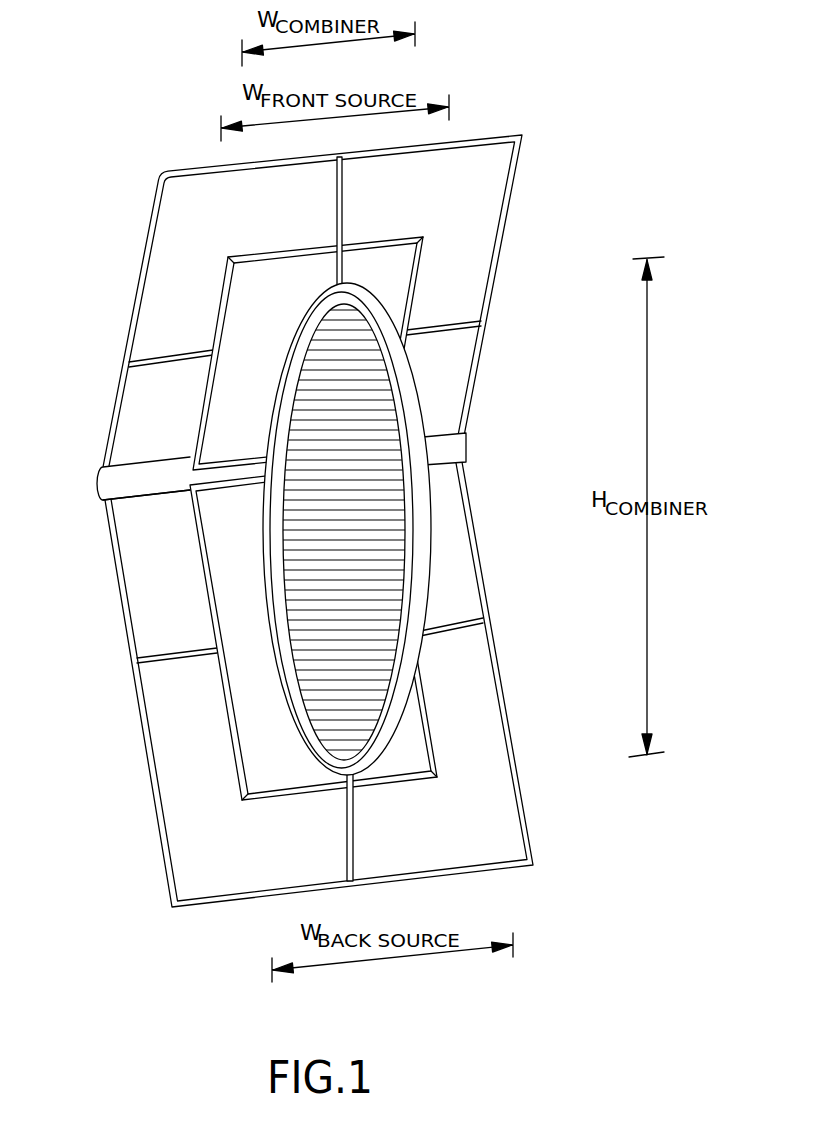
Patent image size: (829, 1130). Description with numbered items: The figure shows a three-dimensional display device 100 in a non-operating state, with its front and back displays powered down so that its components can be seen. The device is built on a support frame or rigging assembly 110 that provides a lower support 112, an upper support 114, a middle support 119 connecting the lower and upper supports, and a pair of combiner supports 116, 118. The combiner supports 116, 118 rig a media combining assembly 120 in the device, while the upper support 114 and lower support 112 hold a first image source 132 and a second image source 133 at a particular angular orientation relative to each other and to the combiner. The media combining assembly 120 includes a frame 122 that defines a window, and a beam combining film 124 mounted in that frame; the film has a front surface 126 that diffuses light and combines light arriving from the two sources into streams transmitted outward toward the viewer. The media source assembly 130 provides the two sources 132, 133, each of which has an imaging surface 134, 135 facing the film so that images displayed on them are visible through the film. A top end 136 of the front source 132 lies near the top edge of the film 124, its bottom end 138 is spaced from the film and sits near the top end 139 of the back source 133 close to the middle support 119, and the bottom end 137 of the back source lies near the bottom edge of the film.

The 3D display device 100 is at (358, 482).
The support frame or rigging assembly 110 is at (295, 521).
The lower support 112 is at (152, 773).
The upper support 114 is at (131, 324).
The combiner support 116 is at (353, 842).
The combiner support 118 is at (343, 197).
The middle support 119 is at (462, 447).
The 2D media combining assembly 120 is at (409, 529).
The frame 122 is at (420, 648).
The beam combining film 124 is at (403, 528).
The front surface 126 is at (400, 462).
The 2D media source assembly 130 is at (301, 481).
The first 2D image source 132 is at (203, 311).
The second 2D image source 133 is at (186, 559).
The 2D imaging surface 134 is at (231, 422).
The 2D imaging surface 135 is at (243, 677).
The top end 136 is at (424, 236).
The bottom end 137 is at (402, 783).
The bottom end 138 is at (197, 437).
The top end 139 is at (187, 500).